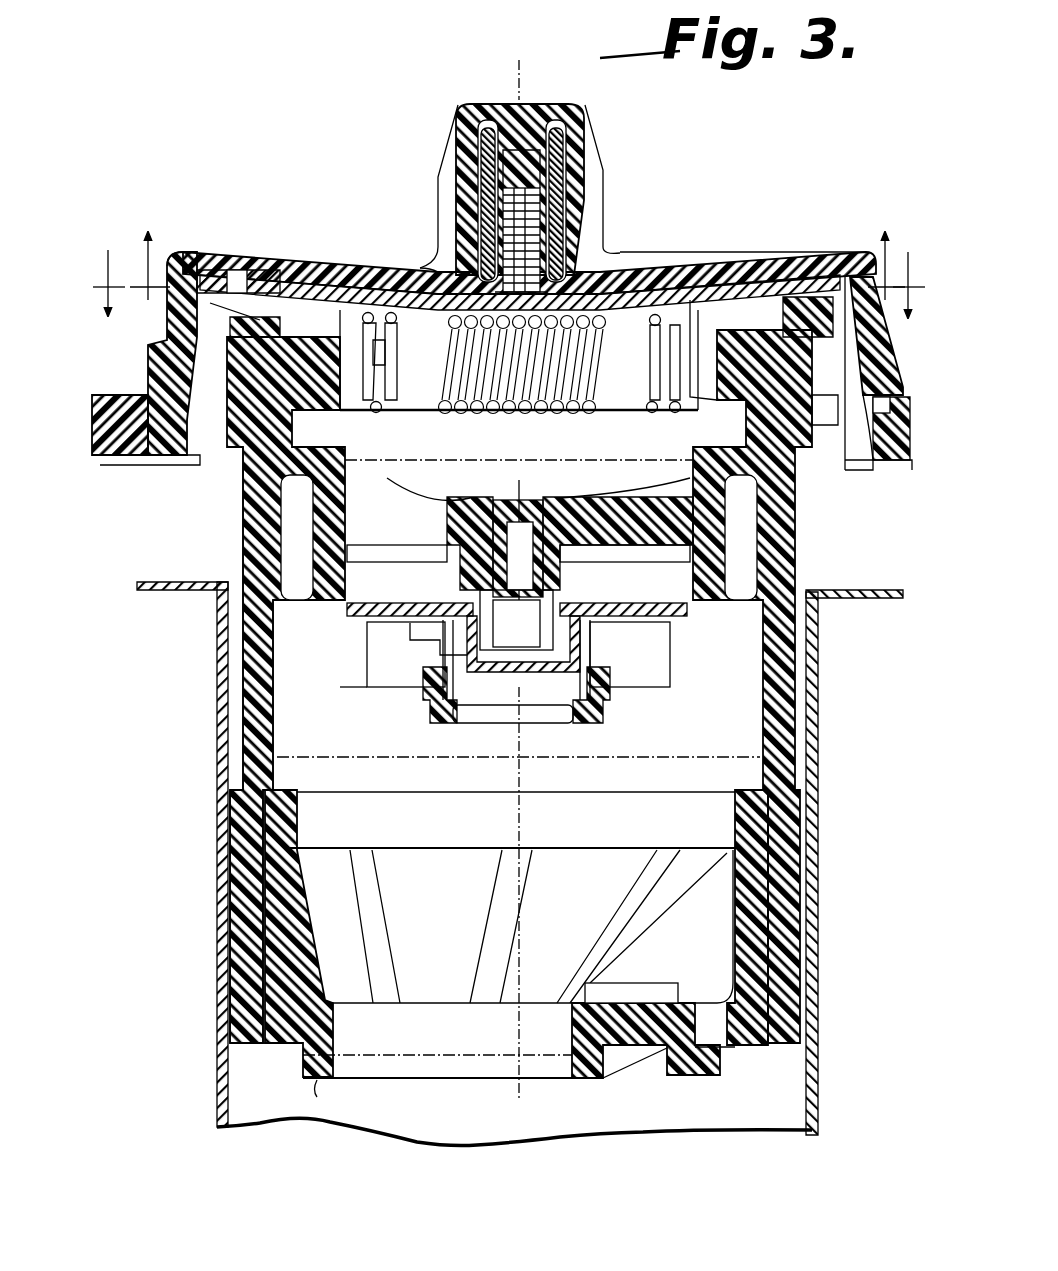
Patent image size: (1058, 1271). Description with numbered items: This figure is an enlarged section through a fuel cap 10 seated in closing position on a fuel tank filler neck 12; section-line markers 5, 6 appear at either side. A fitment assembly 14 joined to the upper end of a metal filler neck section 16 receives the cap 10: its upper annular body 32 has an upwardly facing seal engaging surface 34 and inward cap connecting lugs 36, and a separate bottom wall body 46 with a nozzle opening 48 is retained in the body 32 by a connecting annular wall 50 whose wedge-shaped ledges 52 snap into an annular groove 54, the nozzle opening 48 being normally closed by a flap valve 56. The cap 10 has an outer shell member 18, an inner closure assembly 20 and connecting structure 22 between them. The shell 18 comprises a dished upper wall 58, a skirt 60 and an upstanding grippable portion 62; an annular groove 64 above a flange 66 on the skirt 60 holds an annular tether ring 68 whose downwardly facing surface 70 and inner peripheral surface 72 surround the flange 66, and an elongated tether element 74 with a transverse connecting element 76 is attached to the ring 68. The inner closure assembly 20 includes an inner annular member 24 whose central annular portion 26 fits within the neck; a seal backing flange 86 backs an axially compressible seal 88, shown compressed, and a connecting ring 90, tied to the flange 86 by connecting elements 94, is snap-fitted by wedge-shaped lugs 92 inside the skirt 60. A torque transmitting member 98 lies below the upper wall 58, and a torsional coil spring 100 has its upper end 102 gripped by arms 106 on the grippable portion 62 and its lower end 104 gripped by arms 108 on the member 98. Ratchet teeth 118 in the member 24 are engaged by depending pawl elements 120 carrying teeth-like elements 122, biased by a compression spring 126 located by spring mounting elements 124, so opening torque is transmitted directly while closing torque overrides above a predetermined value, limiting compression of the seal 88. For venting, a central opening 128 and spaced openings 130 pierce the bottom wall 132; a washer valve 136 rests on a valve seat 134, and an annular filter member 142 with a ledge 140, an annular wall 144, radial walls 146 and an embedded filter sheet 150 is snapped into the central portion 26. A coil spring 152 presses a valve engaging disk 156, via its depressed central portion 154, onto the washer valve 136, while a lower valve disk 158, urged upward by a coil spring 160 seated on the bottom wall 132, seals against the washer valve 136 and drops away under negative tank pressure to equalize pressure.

The section line 5 is at (517, 245).
The section line 6 is at (509, 302).
The fuel cap 10 is at (758, 216).
The fuel tank filler neck 12 is at (166, 726).
The fitment assembly 14 is at (826, 648).
The metal filler neck section 16 is at (216, 1033).
The outer shell member 18 is at (288, 250).
The inner closure assembly 20 is at (276, 571).
The connecting structure 22 is at (460, 274).
The inner annular member 24 is at (348, 702).
The central annular portion 26 is at (265, 474).
The upper annular body 32 is at (216, 608).
The seal engaging surface 34 is at (712, 426).
The cap connecting lugs 36 is at (345, 430).
The bottom wall body 46 is at (637, 1038).
The nozzle opening 48 is at (573, 1045).
The connecting annular wall 50 is at (760, 864).
The wedge-shaped ledges 52 is at (230, 990).
The annular groove 54 is at (242, 944).
The flap valve 56 is at (474, 1086).
The dished upper wall 58 is at (666, 270).
The skirt 60 is at (176, 332).
The grippable portion 62 is at (580, 136).
The annular groove 64 is at (872, 434).
The tether ring supporting flange 66 is at (858, 462).
The annular tether ring 68 is at (906, 462).
The downwardly facing annular surface 70 is at (876, 462).
The inner peripheral annular surface 72 is at (872, 402).
The elongated tether element 74 is at (100, 424).
The connecting element 76 is at (140, 470).
The annular seal backing flange 86 is at (288, 292).
The annular axially compressible seal 88 is at (226, 368).
The annular connecting ring 90 is at (828, 302).
The wedge-shaped connecting lugs 92 is at (862, 300).
The connecting elements 94 is at (800, 342).
The torque transmitting member 98 is at (394, 272).
The torsional coil spring 100 is at (478, 168).
The upper end 102 is at (504, 110).
The lower end 104 is at (574, 274).
The depending end gripping arms 106 is at (480, 152).
The end gripping arms 108 is at (545, 214).
The ratchet teeth 118 is at (372, 384).
The depending pawl elements 120 is at (386, 348).
The teeth-like elements 122 is at (392, 324).
The spring mounting elements 124 is at (446, 408).
The compression spring 126 is at (481, 416).
The central opening 128 is at (576, 722).
The annularly spaced openings 130 is at (380, 700).
The bottom wall 132 is at (608, 710).
The valve seat 134 is at (612, 628).
The washer valve 136 is at (467, 606).
The upwardly facing ledge 140 is at (268, 529).
The annular filter member 142 is at (790, 550).
The annular wall 144 is at (360, 516).
The radial walls 146 is at (444, 500).
The filter sheet 150 is at (424, 552).
The coil spring 152 is at (462, 672).
The depressed central portion 154 is at (460, 662).
The valve engaging disk 156 is at (362, 658).
The lower valve disk 158 is at (426, 718).
The coil spring 160 is at (552, 712).